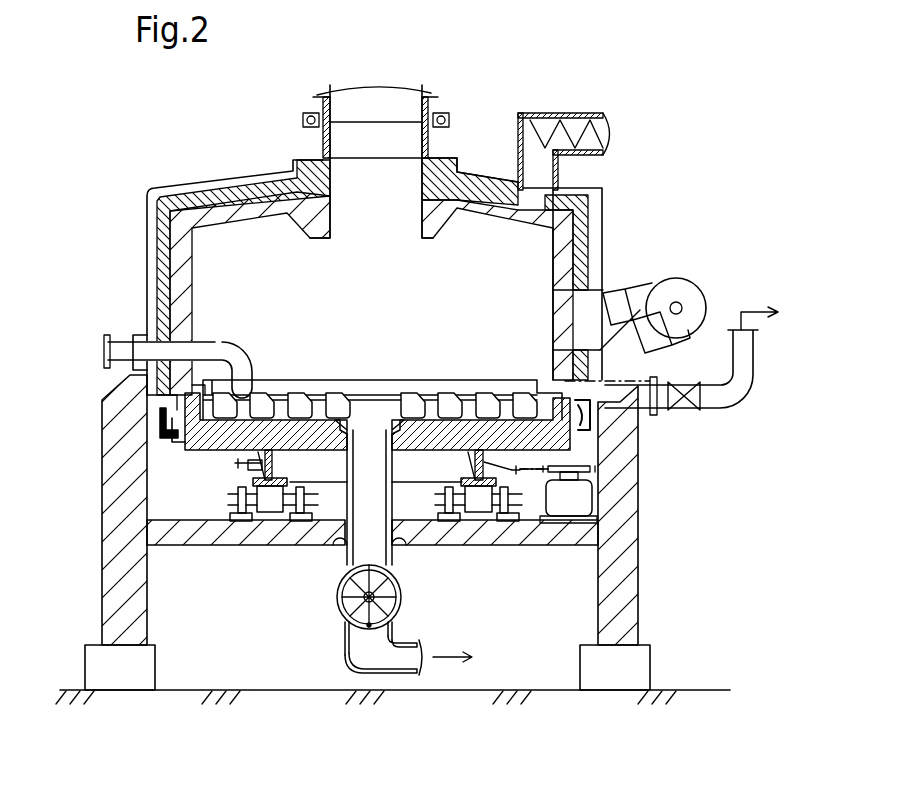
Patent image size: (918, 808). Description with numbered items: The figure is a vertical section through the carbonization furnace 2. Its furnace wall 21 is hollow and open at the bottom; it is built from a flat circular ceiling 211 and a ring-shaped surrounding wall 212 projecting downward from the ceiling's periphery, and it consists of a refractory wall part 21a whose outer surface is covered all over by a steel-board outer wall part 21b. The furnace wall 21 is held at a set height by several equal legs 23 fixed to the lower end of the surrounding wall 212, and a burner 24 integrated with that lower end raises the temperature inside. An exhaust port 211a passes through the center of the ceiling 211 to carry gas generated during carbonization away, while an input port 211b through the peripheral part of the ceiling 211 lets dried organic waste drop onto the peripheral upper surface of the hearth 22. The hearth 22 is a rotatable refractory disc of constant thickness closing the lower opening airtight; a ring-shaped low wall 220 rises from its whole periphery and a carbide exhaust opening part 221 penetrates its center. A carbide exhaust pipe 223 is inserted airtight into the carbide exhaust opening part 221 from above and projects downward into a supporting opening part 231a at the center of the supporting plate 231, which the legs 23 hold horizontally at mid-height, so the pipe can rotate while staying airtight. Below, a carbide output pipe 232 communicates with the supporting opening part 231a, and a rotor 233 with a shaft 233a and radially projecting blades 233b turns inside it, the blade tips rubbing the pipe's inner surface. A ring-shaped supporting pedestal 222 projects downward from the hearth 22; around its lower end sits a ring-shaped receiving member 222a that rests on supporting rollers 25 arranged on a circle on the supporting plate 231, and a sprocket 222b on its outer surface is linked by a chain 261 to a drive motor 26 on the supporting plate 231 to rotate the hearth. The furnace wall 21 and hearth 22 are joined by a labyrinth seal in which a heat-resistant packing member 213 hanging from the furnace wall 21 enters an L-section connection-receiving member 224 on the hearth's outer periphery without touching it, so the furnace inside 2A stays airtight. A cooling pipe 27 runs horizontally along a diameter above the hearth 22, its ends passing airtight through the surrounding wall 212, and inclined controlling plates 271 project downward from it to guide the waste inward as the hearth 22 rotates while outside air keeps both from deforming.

The carbonization furnace 2 is at (151, 150).
The furnace wall 21 is at (338, 247).
The refractory wall part 21a is at (192, 275).
The outer wall part 21b is at (156, 228).
The ceiling 211 is at (258, 188).
The exhaust port 211a is at (370, 230).
The input port 211b is at (535, 215).
The surrounding wall 212 is at (152, 270).
The packing member 213 is at (157, 420).
The furnace inside 2A is at (462, 238).
The hearth 22 is at (205, 450).
The ring-shaped low wall 220 is at (200, 348).
The carbide exhaust opening part 221 is at (377, 425).
The supporting pedestal 222 is at (252, 488).
The receiving member 222a is at (283, 488).
The sprocket 222b is at (512, 506).
The carbide exhaust pipe 223 is at (396, 468).
The connection-receiving member 224 is at (173, 442).
The legs 23 is at (102, 496).
The supporting plate 231 is at (490, 545).
The supporting opening part 231a is at (338, 548).
The carbide output pipe 232 is at (403, 597).
The rotor 233 is at (314, 647).
The shaft 233a is at (345, 640).
The blades 233b is at (340, 616).
The burner 24 is at (676, 284).
The supporting rollers 25 is at (278, 522).
The drive motor 26 is at (647, 470).
The chain 261 is at (600, 436).
The cooling pipe 27 is at (396, 372).
The controlling plates 271 is at (262, 394).